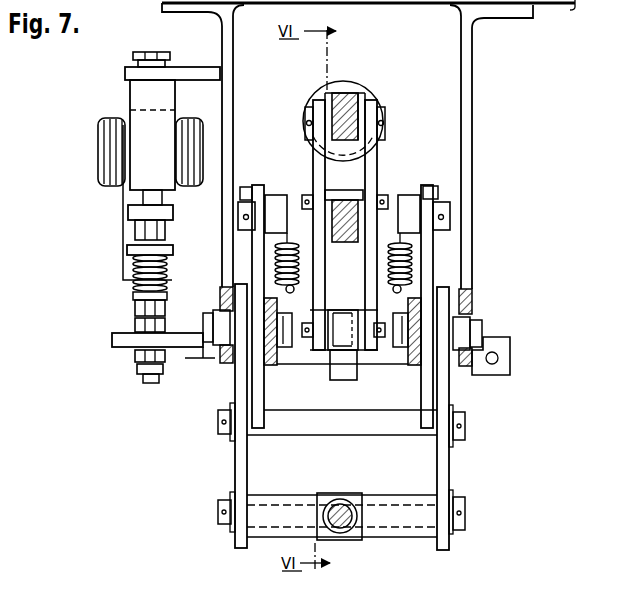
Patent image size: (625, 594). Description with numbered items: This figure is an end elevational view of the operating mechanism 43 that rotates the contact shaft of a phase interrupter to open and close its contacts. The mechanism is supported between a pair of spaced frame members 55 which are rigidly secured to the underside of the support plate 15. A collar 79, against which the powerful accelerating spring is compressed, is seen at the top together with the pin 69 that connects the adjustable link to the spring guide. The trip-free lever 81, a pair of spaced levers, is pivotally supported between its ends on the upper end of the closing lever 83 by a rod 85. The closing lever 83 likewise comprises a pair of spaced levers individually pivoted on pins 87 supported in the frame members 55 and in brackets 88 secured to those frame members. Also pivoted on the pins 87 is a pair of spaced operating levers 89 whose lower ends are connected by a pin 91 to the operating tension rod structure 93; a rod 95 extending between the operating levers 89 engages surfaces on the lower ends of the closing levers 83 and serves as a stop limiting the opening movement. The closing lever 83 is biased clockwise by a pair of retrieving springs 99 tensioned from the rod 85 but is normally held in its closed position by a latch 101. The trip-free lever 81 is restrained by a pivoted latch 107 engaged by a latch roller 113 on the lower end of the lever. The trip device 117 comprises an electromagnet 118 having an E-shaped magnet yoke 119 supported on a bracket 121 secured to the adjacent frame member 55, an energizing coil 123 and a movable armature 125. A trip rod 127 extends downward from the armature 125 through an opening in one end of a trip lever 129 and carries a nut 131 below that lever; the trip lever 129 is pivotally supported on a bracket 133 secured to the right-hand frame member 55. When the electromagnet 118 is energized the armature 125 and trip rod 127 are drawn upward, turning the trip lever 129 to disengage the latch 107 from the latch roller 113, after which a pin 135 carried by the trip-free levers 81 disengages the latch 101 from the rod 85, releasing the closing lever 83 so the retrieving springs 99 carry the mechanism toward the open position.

The support plate 15 is at (410, 9).
The operating mechanism 43 is at (535, 194).
The frame members 55 is at (234, 49).
The pin 69 is at (385, 112).
The collar 79 is at (342, 81).
The trip-free lever 81 is at (316, 163).
The closing lever 83 is at (257, 186).
The rod 85 is at (413, 196).
The pins 87 is at (210, 320).
The brackets 88 is at (268, 366).
The operating levers 89 is at (235, 386).
The pin 91 is at (216, 511).
The operating tension rod structure 93 is at (362, 500).
The rod 95 is at (383, 434).
The retrieving springs 99 is at (387, 288).
The latch 101 is at (356, 242).
The latch 107 is at (345, 380).
The latch roller 113 is at (352, 352).
The trip device 117 is at (135, 287).
The electromagnet 118 is at (139, 163).
The magnet yoke 119 is at (175, 96).
The bracket 121 is at (205, 68).
The energizing coil 123 is at (99, 132).
The armature 125 is at (173, 214).
The trip rod 127 is at (137, 331).
The trip lever 129 is at (112, 344).
The nut 131 is at (162, 353).
The bracket 133 is at (503, 337).
The pin 135 is at (352, 178).